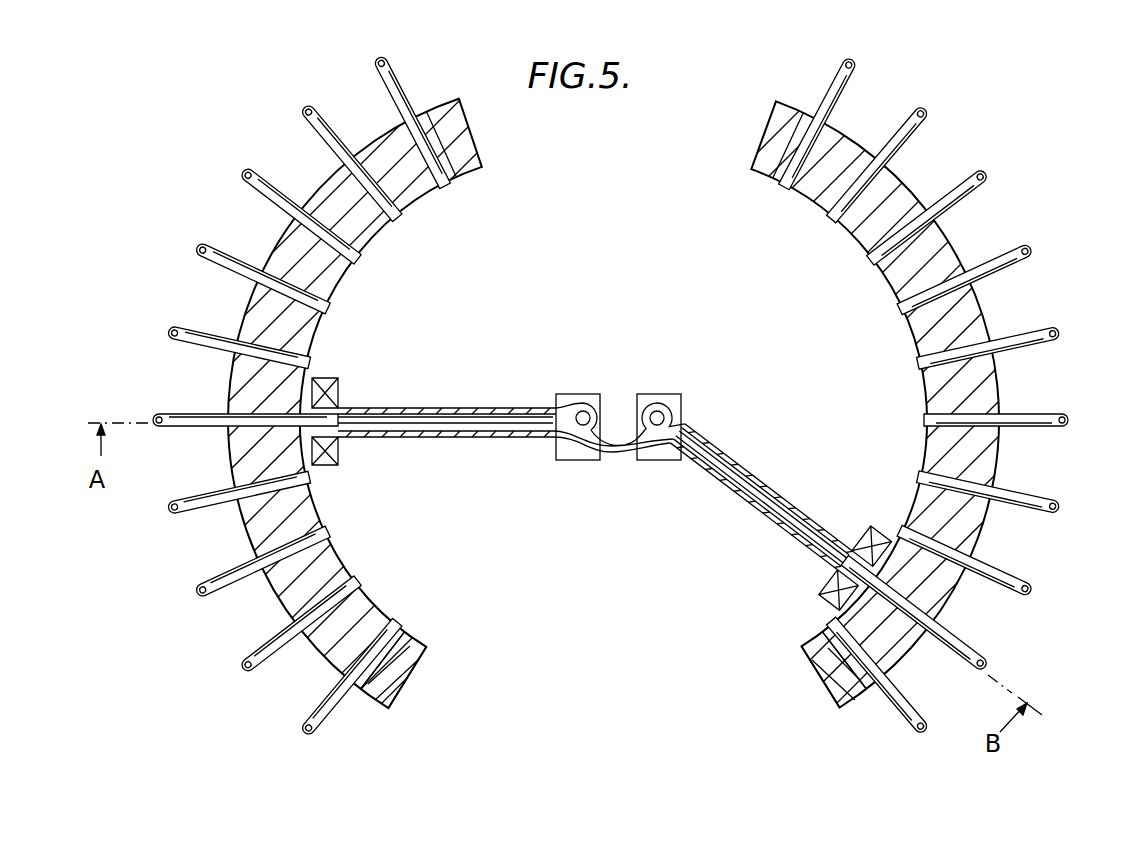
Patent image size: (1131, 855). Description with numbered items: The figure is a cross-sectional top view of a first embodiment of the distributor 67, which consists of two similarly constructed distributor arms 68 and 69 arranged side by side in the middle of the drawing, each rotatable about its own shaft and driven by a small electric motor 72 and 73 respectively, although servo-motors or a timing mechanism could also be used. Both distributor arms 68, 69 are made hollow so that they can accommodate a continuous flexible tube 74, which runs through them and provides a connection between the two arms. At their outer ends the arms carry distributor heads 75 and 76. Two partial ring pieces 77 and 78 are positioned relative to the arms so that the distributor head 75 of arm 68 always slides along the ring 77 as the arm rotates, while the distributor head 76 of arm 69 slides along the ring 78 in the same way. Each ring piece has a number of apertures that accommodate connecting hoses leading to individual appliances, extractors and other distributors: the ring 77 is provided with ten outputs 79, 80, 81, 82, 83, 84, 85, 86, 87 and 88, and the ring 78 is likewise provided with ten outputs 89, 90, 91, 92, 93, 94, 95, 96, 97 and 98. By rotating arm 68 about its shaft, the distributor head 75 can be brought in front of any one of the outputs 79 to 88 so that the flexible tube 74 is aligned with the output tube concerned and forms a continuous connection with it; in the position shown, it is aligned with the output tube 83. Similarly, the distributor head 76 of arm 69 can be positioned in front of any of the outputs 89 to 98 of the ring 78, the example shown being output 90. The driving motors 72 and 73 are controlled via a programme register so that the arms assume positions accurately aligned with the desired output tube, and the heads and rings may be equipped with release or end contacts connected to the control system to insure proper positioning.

The distributor 67 is at (581, 346).
The distributor arm 68 is at (432, 438).
The distributor arm 69 is at (770, 520).
The electric motor 72 is at (554, 450).
The electric motor 73 is at (668, 460).
The flexible tube 74 is at (620, 452).
The distributor head 75 is at (336, 388).
The distributor head 76 is at (870, 527).
The partial ring piece 77 is at (415, 635).
The partial ring piece 78 is at (808, 650).
The output 79 is at (305, 722).
The output 80 is at (246, 658).
The output 81 is at (202, 583).
The output 82 is at (175, 500).
The output tube 83 is at (190, 414).
The output 84 is at (187, 329).
The output 85 is at (208, 245).
The output 86 is at (257, 174).
The output 87 is at (317, 112).
The output 88 is at (400, 84).
The output 89 is at (924, 720).
The output 90 is at (983, 657).
The output 91 is at (1026, 582).
The output 92 is at (1052, 500).
The output 93 is at (1060, 414).
The output 94 is at (1049, 328).
The output 95 is at (1020, 246).
The output 96 is at (975, 173).
The output 97 is at (924, 120).
The output 98 is at (835, 76).